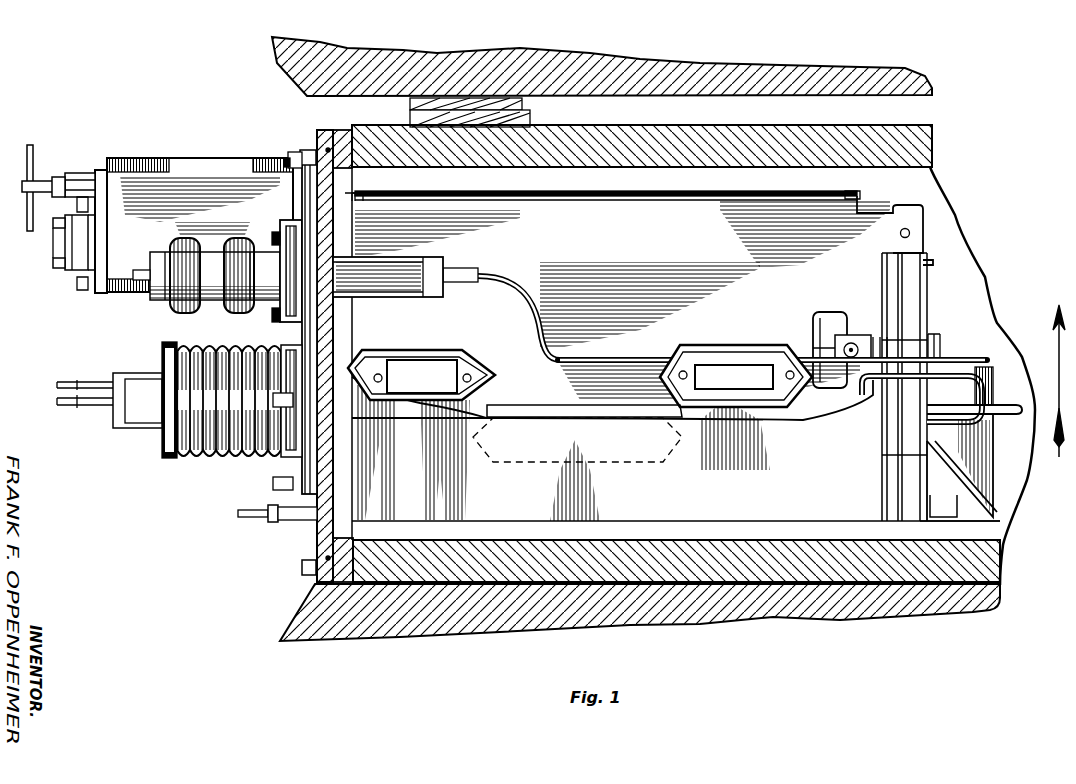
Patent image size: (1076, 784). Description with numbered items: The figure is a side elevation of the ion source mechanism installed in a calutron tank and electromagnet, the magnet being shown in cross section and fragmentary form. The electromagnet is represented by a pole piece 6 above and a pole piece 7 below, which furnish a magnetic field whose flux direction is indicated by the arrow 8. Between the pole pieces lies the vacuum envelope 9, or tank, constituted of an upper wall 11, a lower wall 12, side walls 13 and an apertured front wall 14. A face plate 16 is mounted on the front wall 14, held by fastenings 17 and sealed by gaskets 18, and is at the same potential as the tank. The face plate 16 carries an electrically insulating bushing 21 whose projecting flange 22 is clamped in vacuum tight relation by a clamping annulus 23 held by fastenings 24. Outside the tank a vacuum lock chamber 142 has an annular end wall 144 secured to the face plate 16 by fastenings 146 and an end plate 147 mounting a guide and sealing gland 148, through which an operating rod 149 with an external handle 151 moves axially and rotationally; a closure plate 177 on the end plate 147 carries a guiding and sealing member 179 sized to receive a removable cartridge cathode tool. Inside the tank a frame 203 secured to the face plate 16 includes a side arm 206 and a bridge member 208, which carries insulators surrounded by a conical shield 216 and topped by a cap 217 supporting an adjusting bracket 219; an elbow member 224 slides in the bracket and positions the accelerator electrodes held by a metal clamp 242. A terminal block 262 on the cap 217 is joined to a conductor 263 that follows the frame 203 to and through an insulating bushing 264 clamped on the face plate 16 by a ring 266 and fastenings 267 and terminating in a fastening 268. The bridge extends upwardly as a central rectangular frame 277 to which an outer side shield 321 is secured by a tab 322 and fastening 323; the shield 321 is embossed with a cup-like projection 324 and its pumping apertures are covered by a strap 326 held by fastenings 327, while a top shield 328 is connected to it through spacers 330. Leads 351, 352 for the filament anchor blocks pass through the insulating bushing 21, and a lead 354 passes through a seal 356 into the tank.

The pole piece 6 is at (285, 78).
The pole piece 7 is at (305, 606).
The arrow 8 is at (1053, 345).
The vacuum envelope 9 is at (945, 124).
The upper wall 11 is at (678, 114).
The lower wall 12 is at (668, 545).
The side walls 13 is at (935, 176).
The apertured front wall 14 is at (340, 130).
The face plate 16 is at (318, 540).
The fastenings 17 is at (309, 150).
The gaskets 18 is at (333, 155).
The electrically insulating bushing 21 is at (208, 455).
The projecting flange 22 is at (300, 338).
The clamping annulus 23 is at (288, 460).
The fastenings 24 is at (272, 488).
The vacuum lock chamber 142 is at (169, 150).
The annular end wall 144 is at (297, 152).
The fastenings 146 is at (289, 158).
The end plate 147 is at (104, 293).
The guide and sealing gland 148 is at (78, 173).
The operating rod 149 is at (43, 195).
The external handle 151 is at (36, 162).
The closure plate 177 is at (90, 293).
The guiding and sealing member 179 is at (66, 280).
The frame 203 is at (524, 494).
The side arm 206 is at (850, 510).
The bridge member 208 is at (946, 500).
The conical shield 216 is at (998, 475).
The cap 217 is at (993, 386).
The adjusting bracket 219 is at (940, 327).
The elbow member 224 is at (850, 322).
The metal clamp 242 is at (818, 340).
The terminal block 262 is at (985, 356).
The conductor 263 is at (537, 340).
The insulating bushing 264 is at (393, 280).
The ring 266 is at (287, 226).
The fastenings 267 is at (262, 238).
The fastening 268 is at (140, 269).
The central rectangular frame 277 is at (927, 240).
The outer side shield 321 is at (722, 268).
The tab 322 is at (915, 224).
The fastening 323 is at (906, 228).
The cup-like projection 324 is at (370, 360).
The strap 326 is at (438, 365).
The fastenings 327 is at (472, 378).
The top shield 328 is at (717, 190).
The spacers 330 is at (390, 190).
The lead 351 is at (67, 382).
The lead 352 is at (72, 405).
The lead 354 is at (262, 518).
The seal 356 is at (280, 522).